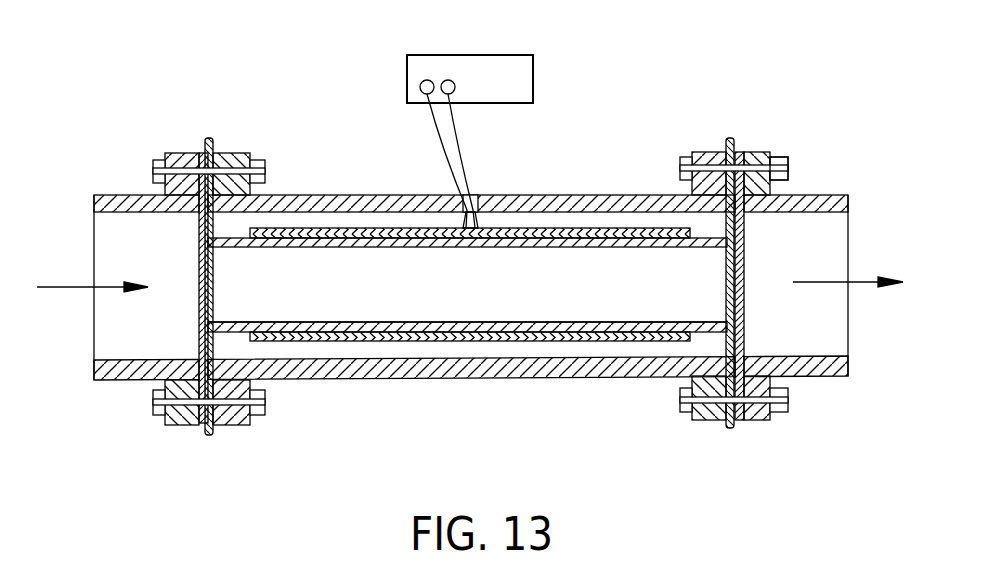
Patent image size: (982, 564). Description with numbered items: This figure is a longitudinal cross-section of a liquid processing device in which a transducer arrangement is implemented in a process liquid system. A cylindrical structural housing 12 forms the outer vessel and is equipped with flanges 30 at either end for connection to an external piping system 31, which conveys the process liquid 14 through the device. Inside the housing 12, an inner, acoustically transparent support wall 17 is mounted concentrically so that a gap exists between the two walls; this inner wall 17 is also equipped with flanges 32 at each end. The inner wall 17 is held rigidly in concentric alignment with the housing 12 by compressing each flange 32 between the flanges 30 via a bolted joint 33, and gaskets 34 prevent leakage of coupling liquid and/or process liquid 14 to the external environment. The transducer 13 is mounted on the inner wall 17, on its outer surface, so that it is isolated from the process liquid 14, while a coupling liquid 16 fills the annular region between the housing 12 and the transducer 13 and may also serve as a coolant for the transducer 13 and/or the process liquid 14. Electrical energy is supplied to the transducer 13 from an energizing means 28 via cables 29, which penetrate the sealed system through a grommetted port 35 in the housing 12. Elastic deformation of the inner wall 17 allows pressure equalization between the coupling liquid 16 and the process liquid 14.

The structural housing 12 is at (403, 362).
The transducer 13 is at (480, 336).
The process liquid 14 is at (481, 299).
The coupling liquid 16 is at (570, 347).
The inner acoustically transparent support wall 17 is at (630, 322).
The energizing means 28 is at (496, 68).
The cables 29 is at (461, 152).
The flanges 30 is at (710, 420).
The external piping system 31 is at (113, 382).
The flanges 32 is at (731, 138).
The bolted joint 33 is at (786, 165).
The gaskets 34 is at (727, 153).
The grommetted port 35 is at (471, 198).